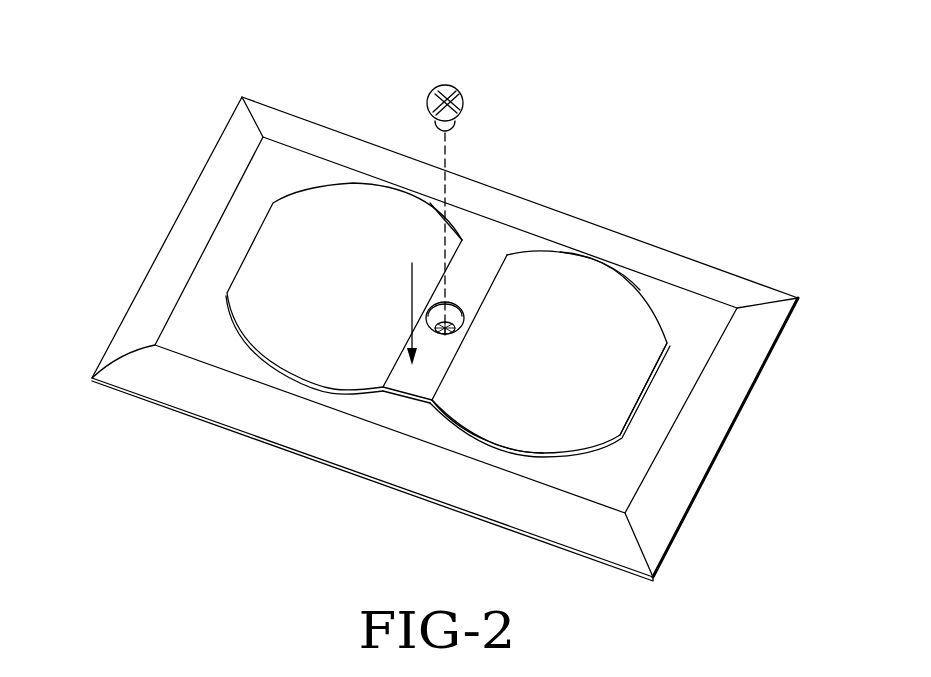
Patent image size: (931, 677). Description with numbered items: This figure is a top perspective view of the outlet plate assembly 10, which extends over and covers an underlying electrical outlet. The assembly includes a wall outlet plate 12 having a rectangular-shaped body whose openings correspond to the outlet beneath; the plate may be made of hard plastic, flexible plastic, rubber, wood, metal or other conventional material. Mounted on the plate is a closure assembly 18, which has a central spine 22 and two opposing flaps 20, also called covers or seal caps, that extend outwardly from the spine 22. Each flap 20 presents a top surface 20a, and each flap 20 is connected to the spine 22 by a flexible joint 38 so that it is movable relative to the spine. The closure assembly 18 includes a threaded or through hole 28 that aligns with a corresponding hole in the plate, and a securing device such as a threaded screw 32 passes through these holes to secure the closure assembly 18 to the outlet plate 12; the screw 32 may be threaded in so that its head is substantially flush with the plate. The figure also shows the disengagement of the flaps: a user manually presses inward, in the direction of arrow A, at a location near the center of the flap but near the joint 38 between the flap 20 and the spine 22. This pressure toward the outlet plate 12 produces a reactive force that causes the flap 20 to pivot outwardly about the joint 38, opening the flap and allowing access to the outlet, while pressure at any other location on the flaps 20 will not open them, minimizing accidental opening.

The outlet plate assembly 10 is at (755, 135).
The wall outlet plate 12 is at (687, 475).
The closure assembly 18 is at (570, 259).
The flaps 20 is at (308, 210).
The top surface 20a is at (612, 372).
The central spine 22 is at (415, 377).
The through hole 28 is at (457, 302).
The threaded screw 32 is at (460, 99).
The flexible joint 38 is at (450, 363).